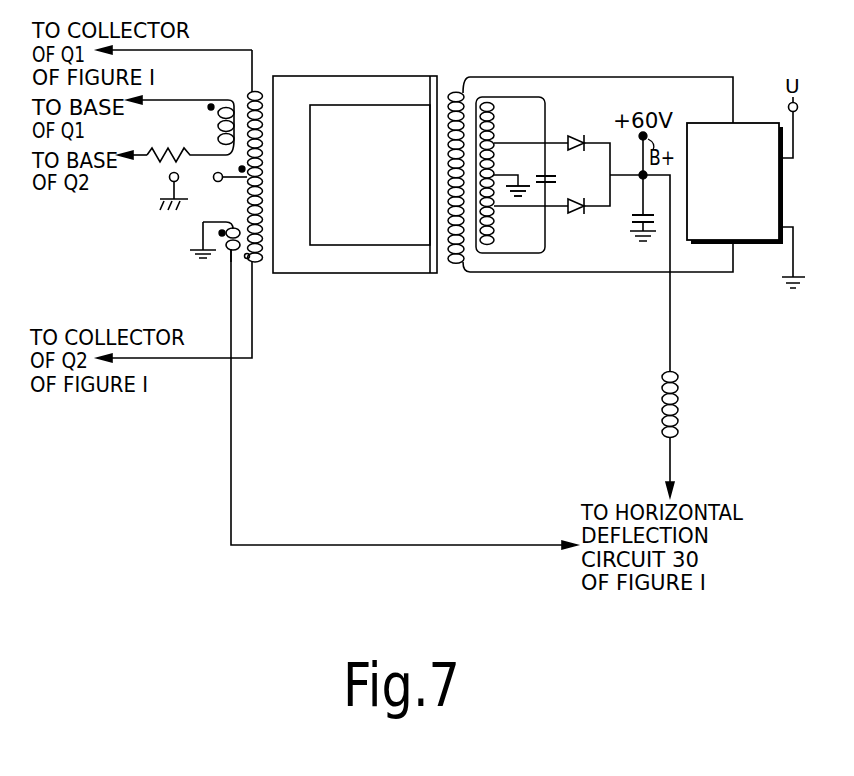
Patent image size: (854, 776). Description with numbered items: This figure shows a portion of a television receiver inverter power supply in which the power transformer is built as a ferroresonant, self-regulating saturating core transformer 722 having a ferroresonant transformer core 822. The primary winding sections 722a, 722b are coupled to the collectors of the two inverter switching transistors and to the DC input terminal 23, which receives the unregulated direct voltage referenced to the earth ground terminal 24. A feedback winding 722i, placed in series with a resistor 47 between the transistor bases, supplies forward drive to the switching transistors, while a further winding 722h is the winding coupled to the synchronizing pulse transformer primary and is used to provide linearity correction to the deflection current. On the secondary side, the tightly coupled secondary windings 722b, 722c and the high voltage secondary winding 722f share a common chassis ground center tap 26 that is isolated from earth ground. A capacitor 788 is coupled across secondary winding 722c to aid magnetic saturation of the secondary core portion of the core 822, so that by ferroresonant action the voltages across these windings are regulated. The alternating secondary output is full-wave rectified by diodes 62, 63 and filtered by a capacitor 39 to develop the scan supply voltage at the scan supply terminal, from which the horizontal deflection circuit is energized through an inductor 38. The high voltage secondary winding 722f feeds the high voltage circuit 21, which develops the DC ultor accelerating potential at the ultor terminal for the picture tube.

The primary winding section 722a is at (248, 100).
The primary winding section 722b is at (248, 212).
The feedback winding 722i is at (218, 131).
The resistor 47 is at (162, 153).
The earth ground terminal 24 is at (169, 180).
The DC input terminal 23 is at (218, 182).
The winding 722h is at (227, 252).
The ferroresonant transformer 722 is at (388, 204).
The ferroresonant transformer core 822 is at (342, 105).
The high voltage secondary winding 722f is at (452, 90).
The secondary winding 722c is at (494, 120).
The chassis ground center tap 26 is at (522, 200).
The capacitor 788 is at (556, 183).
The diode 62 is at (596, 130).
The diode 63 is at (586, 213).
The capacitor 39 is at (634, 226).
The high voltage circuit 21 is at (763, 122).
The inductor 38 is at (679, 391).